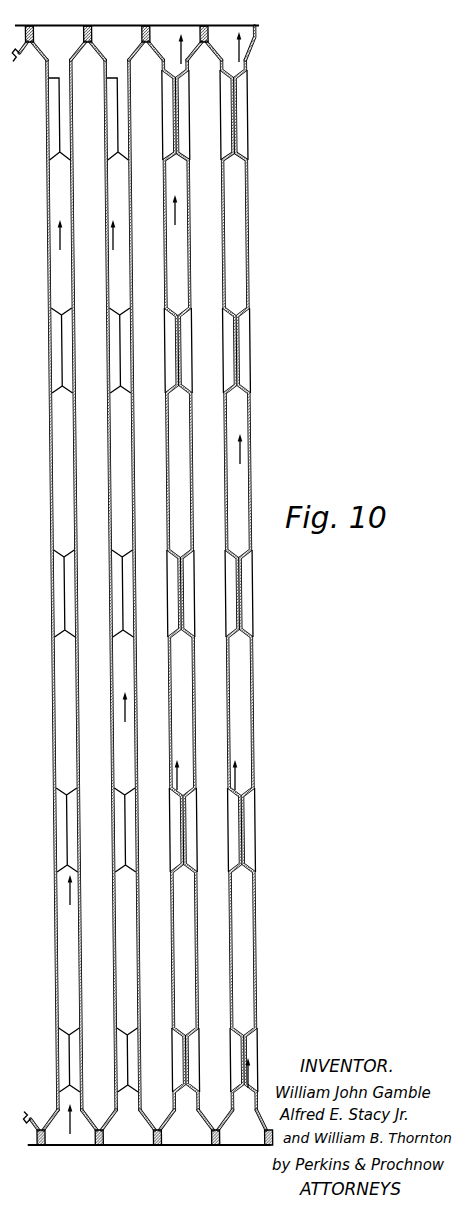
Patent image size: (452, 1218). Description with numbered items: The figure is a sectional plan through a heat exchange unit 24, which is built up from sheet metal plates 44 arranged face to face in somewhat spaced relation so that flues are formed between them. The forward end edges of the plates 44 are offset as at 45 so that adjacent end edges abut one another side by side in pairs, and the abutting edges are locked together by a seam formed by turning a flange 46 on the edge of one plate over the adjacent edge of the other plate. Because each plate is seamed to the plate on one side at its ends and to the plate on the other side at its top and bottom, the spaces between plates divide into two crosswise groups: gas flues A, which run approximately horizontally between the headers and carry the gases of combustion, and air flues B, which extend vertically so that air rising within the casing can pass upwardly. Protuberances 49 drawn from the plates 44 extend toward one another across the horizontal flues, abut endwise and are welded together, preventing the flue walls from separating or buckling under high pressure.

The heat exchange unit 24 is at (196, 278).
The plate 44 is at (195, 738).
The offset 45 is at (247, 43).
The flange 46 is at (146, 26).
The protuberance 49 is at (113, 134).
The gas flue A is at (232, 450).
The air flue B is at (218, 582).